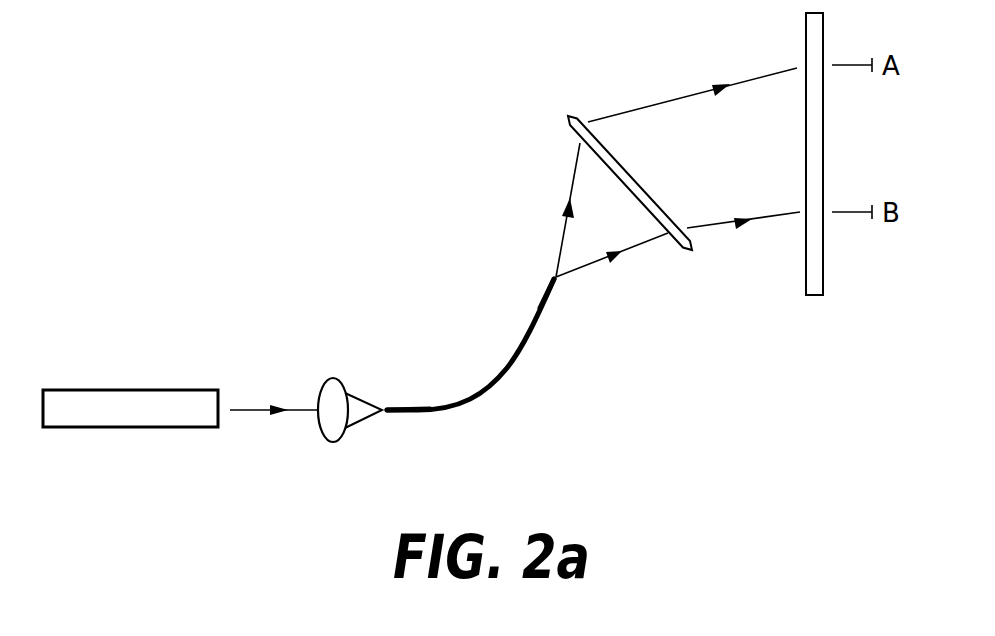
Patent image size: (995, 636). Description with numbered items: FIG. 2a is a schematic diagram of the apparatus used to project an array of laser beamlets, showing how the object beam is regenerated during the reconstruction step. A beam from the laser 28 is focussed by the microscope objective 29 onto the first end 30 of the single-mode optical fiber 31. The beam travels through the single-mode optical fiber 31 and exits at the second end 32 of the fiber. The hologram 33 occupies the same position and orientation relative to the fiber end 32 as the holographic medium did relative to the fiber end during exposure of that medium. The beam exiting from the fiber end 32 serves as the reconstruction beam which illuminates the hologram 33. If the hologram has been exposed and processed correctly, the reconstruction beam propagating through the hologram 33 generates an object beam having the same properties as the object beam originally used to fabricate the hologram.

The laser 28 is at (118, 383).
The microscope objective 29 is at (335, 442).
The first end of single-mode optical fiber 30 is at (406, 418).
The single-mode optical fiber 31 is at (507, 369).
The second end of single-mode optical fiber 32 is at (562, 282).
The hologram 33 is at (668, 243).